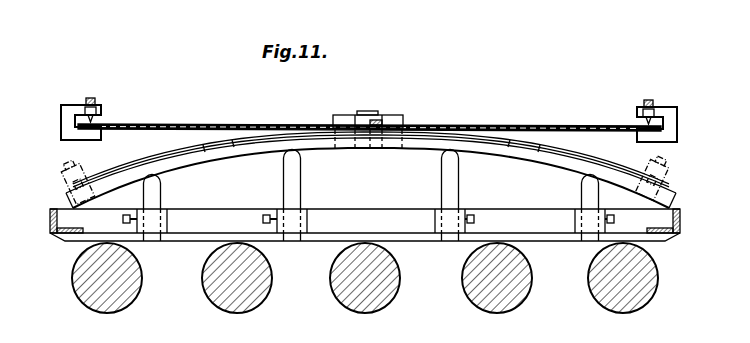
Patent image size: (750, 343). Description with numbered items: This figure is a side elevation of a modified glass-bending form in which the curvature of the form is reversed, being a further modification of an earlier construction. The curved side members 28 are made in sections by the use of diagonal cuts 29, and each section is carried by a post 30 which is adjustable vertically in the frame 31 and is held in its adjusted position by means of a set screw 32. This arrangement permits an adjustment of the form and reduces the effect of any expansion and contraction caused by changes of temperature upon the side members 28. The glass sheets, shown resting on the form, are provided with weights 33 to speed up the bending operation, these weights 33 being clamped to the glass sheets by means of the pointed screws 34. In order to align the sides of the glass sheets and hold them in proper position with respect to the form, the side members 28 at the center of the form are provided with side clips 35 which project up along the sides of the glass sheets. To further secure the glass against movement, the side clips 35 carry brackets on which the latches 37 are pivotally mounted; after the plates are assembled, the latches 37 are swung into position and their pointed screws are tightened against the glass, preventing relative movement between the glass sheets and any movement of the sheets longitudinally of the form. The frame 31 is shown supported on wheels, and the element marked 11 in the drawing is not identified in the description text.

The board / flat strip 11 is at (557, 124).
The side members 28 is at (175, 164).
The diagonal cuts 29 is at (233, 146).
The post 30 is at (294, 174).
The frame 31 is at (374, 219).
The set screw 32 is at (267, 224).
The weights 33 is at (71, 106).
The pointed screws 34 is at (97, 100).
The side clips 35 is at (387, 116).
The latches 37 is at (360, 113).